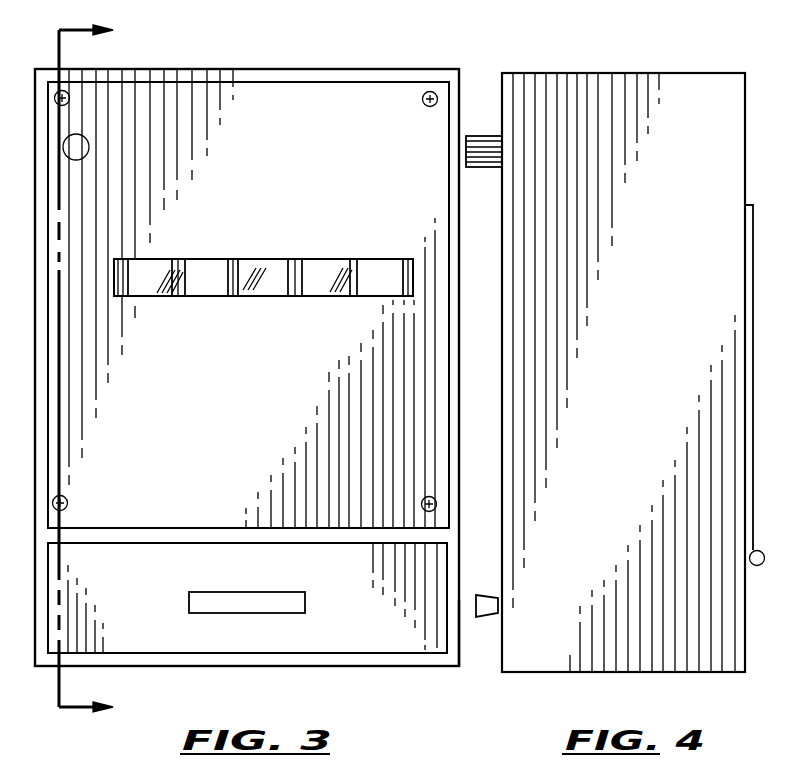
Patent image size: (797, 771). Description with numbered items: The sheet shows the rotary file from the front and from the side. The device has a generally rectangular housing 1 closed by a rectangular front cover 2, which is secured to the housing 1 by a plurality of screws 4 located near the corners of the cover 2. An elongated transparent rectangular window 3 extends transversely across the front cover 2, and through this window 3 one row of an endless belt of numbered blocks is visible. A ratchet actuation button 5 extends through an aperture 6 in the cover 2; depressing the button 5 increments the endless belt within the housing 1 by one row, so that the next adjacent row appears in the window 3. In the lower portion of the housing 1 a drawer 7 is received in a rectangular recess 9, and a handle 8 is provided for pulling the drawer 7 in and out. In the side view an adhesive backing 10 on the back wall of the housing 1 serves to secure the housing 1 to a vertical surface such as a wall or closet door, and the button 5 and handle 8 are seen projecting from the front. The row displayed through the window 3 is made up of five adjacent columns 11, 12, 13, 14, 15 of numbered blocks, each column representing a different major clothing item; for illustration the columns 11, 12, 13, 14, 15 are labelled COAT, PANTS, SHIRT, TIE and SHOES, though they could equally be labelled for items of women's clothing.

In FIG. 3, the housing 1 is at (266, 68).
In FIG. 4, the housing 1 is at (694, 88).
In FIG. 3, the front cover 2 is at (354, 102).
In FIG. 3, the transparent window 3 is at (413, 280).
In FIG. 3, the screws 4 is at (432, 90).
In FIG. 3, the ratchet actuation button 5 is at (86, 143).
In FIG. 4, the ratchet actuation button 5 is at (483, 135).
In FIG. 3, the aperture 6 is at (98, 369).
In FIG. 3, the drawer 7 is at (328, 645).
In FIG. 3, the handle 8 is at (260, 608).
In FIG. 4, the handle 8 is at (480, 620).
In FIG. 3, the rectangular recess 9 is at (455, 637).
In FIG. 4, the adhesive backing 10 is at (750, 562).
In FIG. 3, the coat column 11 is at (143, 296).
In FIG. 3, the pants column 12 is at (203, 296).
In FIG. 3, the shirt column 13 is at (262, 296).
In FIG. 3, the tie column 14 is at (313, 296).
In FIG. 3, the shoes column 15 is at (378, 296).